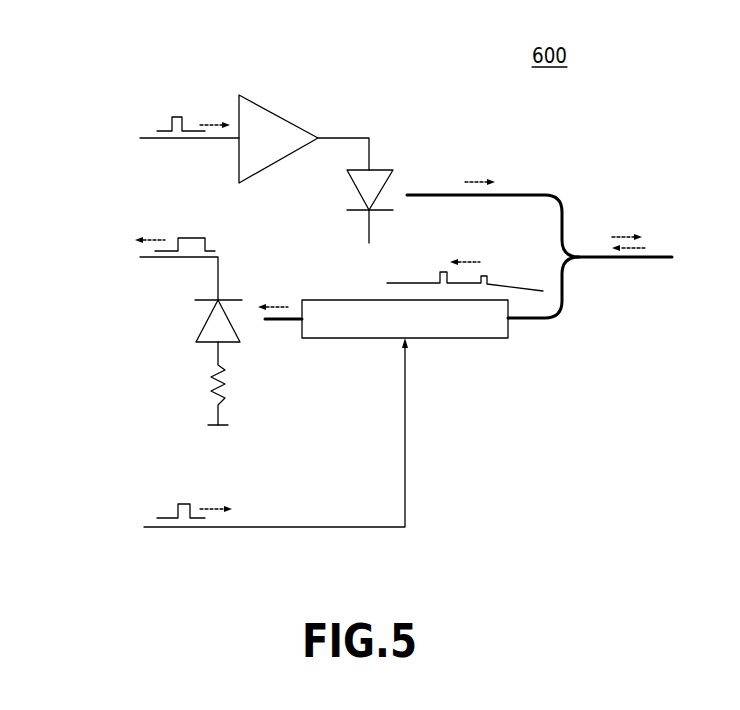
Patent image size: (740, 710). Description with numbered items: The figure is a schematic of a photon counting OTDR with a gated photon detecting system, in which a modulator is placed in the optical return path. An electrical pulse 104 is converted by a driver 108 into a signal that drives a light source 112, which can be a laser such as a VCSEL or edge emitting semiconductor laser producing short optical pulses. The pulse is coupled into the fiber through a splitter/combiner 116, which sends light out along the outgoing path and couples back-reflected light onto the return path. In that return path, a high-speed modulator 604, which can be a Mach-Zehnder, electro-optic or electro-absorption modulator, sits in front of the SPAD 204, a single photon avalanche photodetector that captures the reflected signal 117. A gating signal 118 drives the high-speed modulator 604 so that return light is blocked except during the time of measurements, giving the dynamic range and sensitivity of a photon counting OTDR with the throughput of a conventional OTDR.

The electrical pulse 104 is at (136, 131).
The driver 108 is at (267, 108).
The light source 112 is at (381, 167).
The splitter/combiner 116 is at (568, 215).
The reflected signal 117 is at (131, 257).
The gating signal 118 is at (237, 503).
The single photon avalanche photodetector (SPAD) 204 is at (207, 345).
The high-speed modulator 604 is at (460, 339).